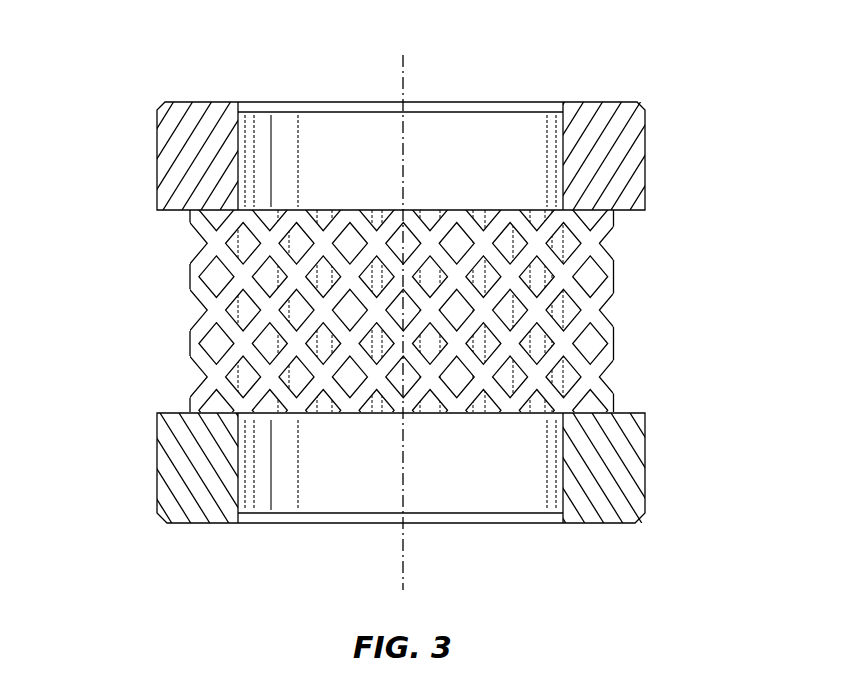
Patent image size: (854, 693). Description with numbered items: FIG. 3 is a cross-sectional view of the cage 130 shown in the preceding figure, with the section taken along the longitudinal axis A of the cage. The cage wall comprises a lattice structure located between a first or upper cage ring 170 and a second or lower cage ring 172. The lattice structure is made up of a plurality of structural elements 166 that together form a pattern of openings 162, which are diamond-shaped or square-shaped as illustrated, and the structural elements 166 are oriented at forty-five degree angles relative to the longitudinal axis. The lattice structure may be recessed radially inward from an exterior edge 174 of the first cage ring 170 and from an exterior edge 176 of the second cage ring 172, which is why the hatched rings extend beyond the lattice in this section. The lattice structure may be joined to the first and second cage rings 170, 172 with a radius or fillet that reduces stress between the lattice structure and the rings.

The energy absorbing lattice structure 130 is at (435, 323).
The opening 162 is at (218, 352).
The structural element 166 is at (190, 258).
The first cage ring 170 is at (157, 152).
The second cage ring 172 is at (157, 445).
The exterior edge of the first cage ring 174 is at (645, 123).
The exterior edge of the second cage ring 176 is at (645, 455).